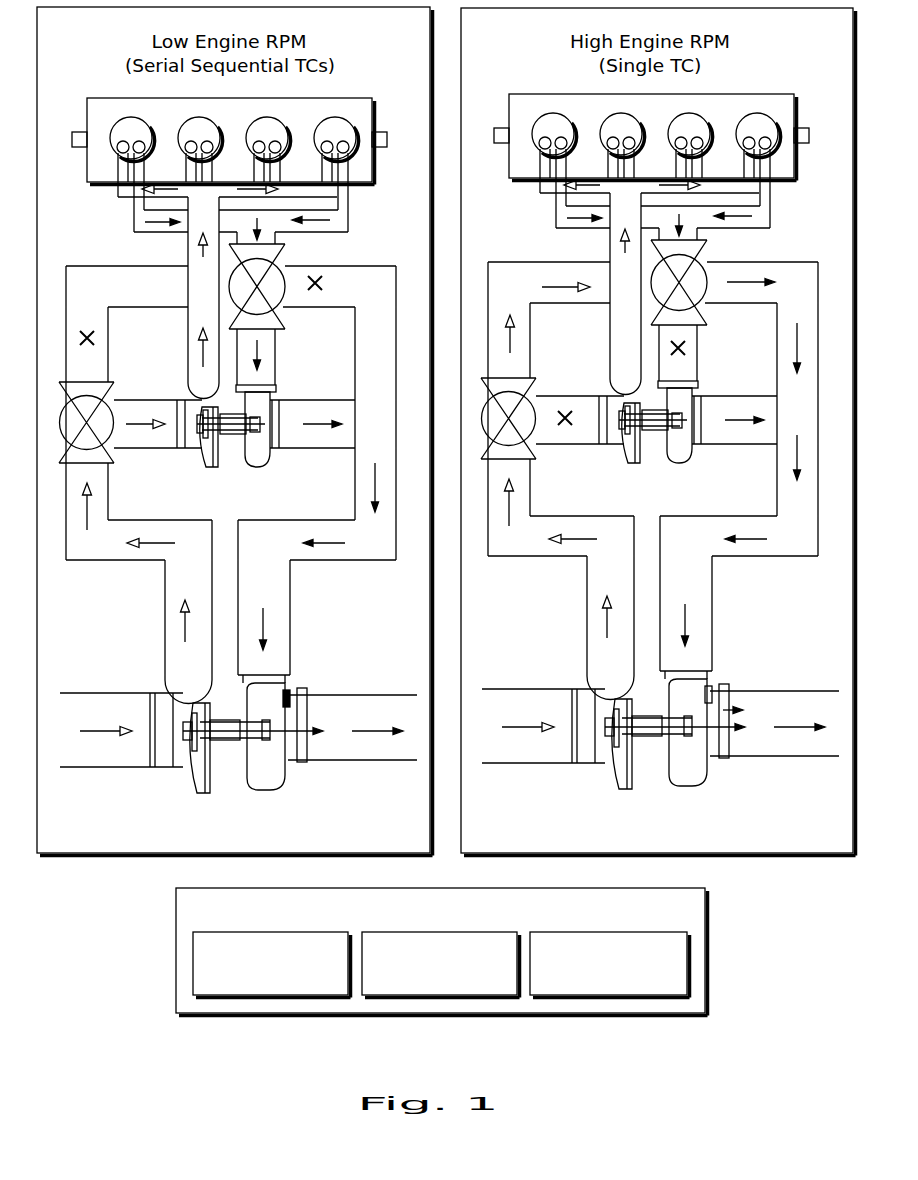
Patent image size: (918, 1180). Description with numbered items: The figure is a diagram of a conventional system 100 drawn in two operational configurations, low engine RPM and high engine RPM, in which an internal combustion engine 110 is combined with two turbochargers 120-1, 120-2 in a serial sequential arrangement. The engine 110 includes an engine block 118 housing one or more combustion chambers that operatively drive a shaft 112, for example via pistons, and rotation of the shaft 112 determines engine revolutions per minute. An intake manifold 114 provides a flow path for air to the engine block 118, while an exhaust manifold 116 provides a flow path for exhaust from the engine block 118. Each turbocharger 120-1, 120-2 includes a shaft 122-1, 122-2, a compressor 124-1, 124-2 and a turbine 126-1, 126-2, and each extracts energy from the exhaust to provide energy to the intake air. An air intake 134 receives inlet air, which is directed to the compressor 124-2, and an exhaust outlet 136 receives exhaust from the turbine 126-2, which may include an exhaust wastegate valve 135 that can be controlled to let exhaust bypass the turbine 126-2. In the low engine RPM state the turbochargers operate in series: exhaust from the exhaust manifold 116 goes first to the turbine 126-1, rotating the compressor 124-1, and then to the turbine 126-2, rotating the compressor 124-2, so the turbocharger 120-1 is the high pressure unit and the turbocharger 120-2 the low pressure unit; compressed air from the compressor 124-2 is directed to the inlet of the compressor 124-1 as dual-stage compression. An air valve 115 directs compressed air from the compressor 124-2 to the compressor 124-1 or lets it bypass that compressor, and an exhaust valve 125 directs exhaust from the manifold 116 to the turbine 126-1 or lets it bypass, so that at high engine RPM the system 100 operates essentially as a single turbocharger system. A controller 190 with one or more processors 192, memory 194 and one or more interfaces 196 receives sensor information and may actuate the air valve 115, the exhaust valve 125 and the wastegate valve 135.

The system 100 is at (80, 38).
The internal combustion engine 110 is at (461, 122).
The shaft 112 is at (435, 106).
The intake manifold 114 is at (408, 274).
The air valve 115 is at (325, 404).
The exhaust manifold 116 is at (485, 199).
The engine block 118 is at (445, 128).
The turbocharger 120-1 is at (447, 452).
The turbocharger 120-2 is at (447, 743).
The shaft 122-1 is at (458, 450).
The shaft 122-2 is at (448, 767).
The compressor 124-1 is at (384, 439).
The compressor 124-2 is at (365, 752).
The exhaust valve 125 is at (496, 316).
The turbine 126-1 is at (508, 431).
The turbine 126-2 is at (522, 741).
The air intake 134 is at (332, 713).
The exhaust wastegate valve 135 is at (536, 677).
The exhaust outlet 136 is at (563, 712).
The controller 190 is at (492, 920).
The processors 192 is at (287, 986).
The memory 194 is at (457, 986).
The interfaces 196 is at (625, 986).